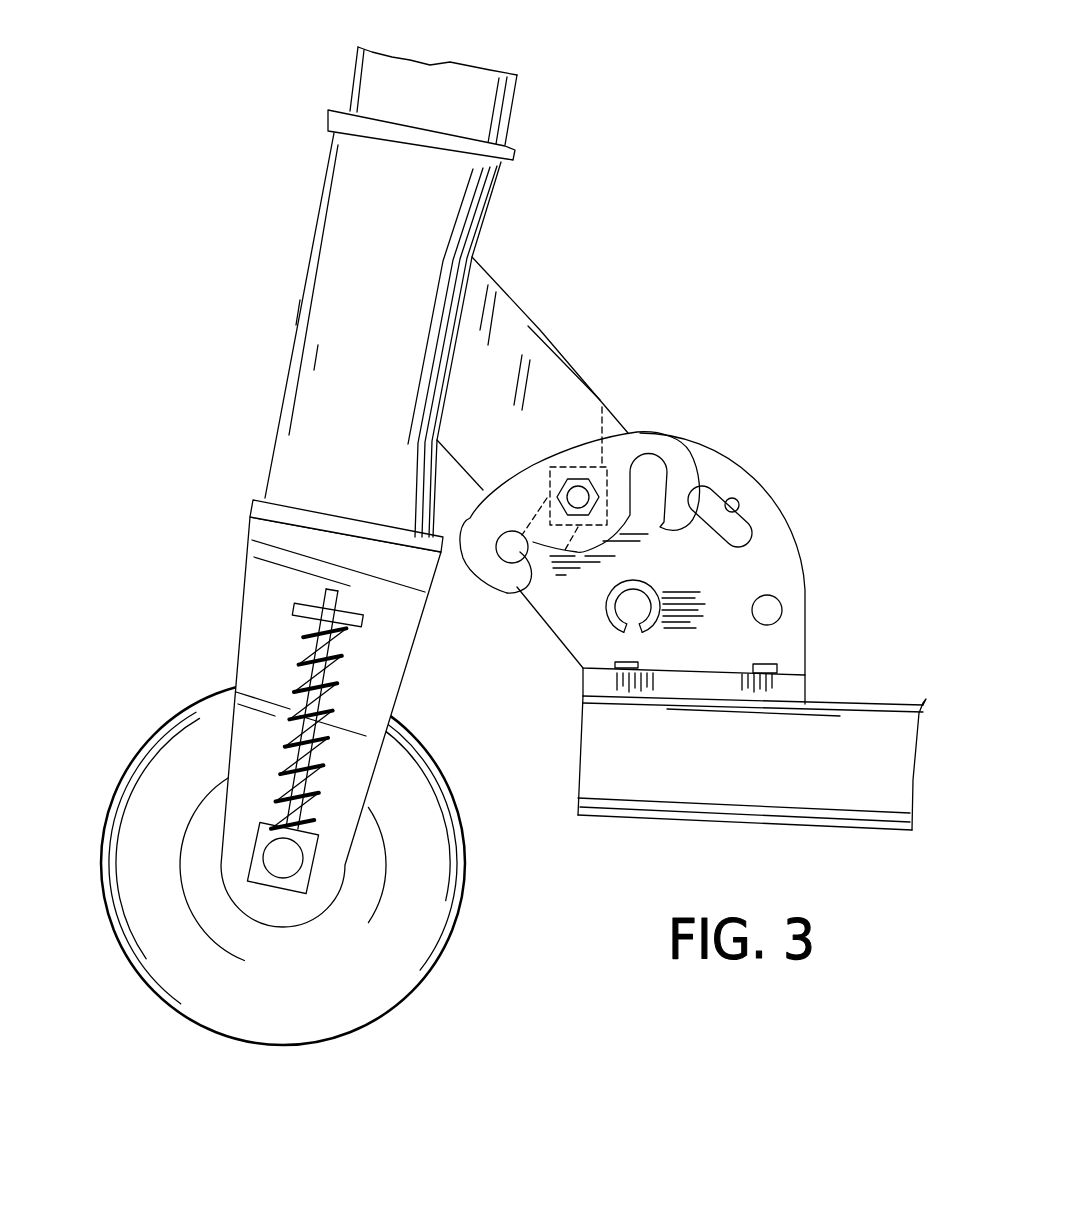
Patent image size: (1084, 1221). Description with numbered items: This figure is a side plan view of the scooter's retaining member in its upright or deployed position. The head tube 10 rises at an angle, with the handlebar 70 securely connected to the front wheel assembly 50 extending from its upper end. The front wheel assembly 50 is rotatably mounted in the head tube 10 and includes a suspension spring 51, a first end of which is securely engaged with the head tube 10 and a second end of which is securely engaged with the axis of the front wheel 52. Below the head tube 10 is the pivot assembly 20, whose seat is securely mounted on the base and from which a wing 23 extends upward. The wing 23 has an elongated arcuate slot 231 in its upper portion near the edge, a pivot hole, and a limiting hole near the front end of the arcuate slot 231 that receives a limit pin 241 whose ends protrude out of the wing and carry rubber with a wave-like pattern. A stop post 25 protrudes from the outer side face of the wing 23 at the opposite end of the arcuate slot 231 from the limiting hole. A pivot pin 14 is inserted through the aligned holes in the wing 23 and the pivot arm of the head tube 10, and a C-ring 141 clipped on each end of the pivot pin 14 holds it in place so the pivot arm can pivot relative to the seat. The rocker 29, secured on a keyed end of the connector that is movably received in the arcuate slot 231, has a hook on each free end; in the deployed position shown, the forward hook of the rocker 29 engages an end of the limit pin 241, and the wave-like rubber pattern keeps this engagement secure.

The head tube 10 is at (343, 335).
The handlebar 70 is at (390, 103).
The pivot assembly 20 is at (572, 403).
The wing 23 is at (687, 568).
The elongated arcuate slot 231 is at (737, 507).
The stop post 25 is at (811, 621).
The C-ring 141 is at (673, 599).
The pivot pin 14 is at (633, 613).
The rocker 29 is at (470, 553).
The limit pin 241 is at (509, 599).
The front wheel assembly 50 is at (304, 713).
The suspension spring 51 is at (303, 690).
The front wheel 52 is at (323, 863).